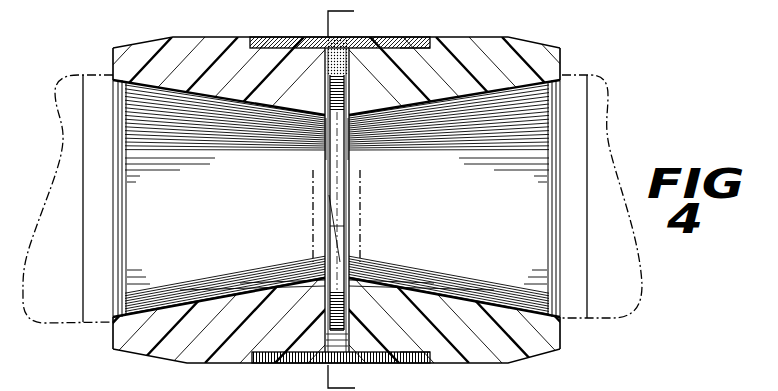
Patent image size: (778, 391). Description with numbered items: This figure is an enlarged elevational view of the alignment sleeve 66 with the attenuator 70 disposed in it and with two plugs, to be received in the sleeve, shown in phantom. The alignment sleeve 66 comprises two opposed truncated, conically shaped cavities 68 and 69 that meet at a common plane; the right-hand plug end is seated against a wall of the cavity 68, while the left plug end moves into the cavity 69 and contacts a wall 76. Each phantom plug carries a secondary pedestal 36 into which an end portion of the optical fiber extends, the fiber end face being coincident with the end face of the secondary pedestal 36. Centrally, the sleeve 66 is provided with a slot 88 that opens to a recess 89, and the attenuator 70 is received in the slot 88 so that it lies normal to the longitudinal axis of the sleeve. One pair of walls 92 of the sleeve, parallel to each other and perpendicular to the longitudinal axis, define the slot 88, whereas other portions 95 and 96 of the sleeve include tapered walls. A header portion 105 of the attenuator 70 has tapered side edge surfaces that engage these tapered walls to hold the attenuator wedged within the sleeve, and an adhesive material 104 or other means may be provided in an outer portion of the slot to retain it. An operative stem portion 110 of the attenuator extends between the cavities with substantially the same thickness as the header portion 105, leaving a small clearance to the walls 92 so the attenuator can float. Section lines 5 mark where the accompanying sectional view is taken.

The alignment sleeve 66 is at (461, 48).
The cavity 68 is at (540, 192).
The cavity 69 is at (137, 241).
The attenuator 70 is at (348, 321).
The wall 76 is at (225, 294).
The slot 88 is at (330, 358).
The recess 89 is at (408, 357).
The walls 92 is at (349, 104).
The portion 95 is at (327, 125).
The portion 96 is at (345, 342).
The adhesive material 104 is at (363, 47).
The header portion 105 is at (327, 73).
The operative stem portion 110 is at (330, 195).
The secondary pedestal 36 is at (350, 212).
The section lines 5- 5 is at (341, 201).